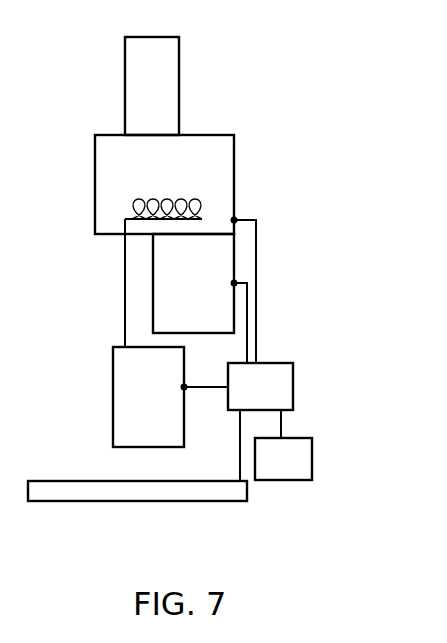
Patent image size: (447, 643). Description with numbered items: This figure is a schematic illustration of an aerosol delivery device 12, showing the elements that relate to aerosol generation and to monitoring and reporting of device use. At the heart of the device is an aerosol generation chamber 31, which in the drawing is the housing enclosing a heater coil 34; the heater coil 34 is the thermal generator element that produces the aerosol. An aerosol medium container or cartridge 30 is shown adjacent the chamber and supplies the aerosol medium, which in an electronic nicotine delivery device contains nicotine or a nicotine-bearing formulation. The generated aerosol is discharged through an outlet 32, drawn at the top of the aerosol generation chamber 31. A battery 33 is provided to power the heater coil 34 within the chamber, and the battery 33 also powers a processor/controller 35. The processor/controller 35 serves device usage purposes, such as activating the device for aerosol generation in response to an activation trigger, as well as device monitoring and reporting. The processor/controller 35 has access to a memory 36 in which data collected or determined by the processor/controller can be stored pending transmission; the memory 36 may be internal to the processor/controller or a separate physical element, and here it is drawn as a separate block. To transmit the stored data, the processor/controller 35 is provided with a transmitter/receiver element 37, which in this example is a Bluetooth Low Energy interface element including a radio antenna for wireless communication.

The aerosol delivery device 12 is at (338, 68).
The aerosol medium container or cartridge 30 is at (213, 267).
The aerosol generation chamber 31 is at (234, 173).
The outlet 32 is at (179, 93).
The battery 33 is at (112, 402).
The heater coil 34 is at (140, 204).
The processor/controller 35 is at (293, 388).
The memory 36 is at (312, 457).
The transmitter/receiver element 37 is at (180, 501).